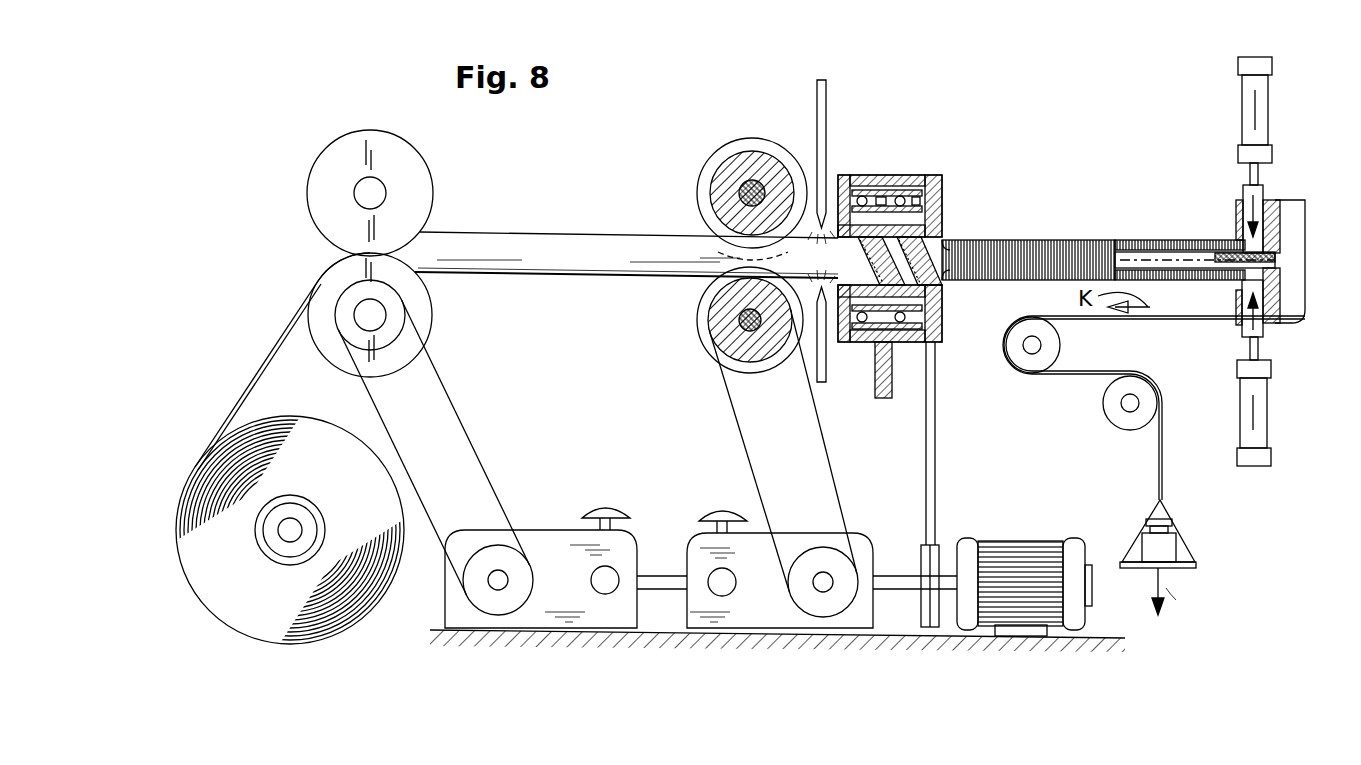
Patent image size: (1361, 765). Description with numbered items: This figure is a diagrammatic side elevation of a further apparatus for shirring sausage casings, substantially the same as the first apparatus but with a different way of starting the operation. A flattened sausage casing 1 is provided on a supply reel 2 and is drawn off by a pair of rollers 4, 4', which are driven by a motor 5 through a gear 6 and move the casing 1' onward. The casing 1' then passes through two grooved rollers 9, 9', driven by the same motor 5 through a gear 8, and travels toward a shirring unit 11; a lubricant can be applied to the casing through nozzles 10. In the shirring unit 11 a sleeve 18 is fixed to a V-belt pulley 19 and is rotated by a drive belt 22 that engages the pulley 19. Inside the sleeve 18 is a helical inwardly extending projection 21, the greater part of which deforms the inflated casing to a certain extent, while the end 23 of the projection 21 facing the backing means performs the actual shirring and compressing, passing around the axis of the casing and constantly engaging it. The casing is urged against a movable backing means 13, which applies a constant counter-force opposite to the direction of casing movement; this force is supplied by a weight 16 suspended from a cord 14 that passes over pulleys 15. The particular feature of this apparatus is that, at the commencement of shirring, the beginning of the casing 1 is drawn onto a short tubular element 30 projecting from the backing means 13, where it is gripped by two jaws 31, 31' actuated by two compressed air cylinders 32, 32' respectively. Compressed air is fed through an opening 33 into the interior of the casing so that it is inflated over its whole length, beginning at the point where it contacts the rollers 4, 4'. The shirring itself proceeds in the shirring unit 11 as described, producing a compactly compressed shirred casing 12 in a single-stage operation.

The flattened sausage casing 1 is at (282, 361).
The inflated casing 1' is at (626, 243).
The supply reel 2 is at (352, 610).
The roller 4 is at (390, 315).
The roller 4' is at (365, 190).
The motor 5 is at (1017, 545).
The gear 6 is at (555, 622).
The gear 8 is at (812, 622).
The grooved roller 9 is at (737, 320).
The grooved roller 9' is at (752, 190).
The nozzles 10 is at (826, 95).
The shirring unit 11 is at (878, 177).
The shirred casing 12 is at (1073, 240).
The backing means 13 is at (1290, 212).
The cord 14 is at (1160, 472).
The pulleys 15 is at (1027, 370).
The weight 16 is at (1172, 550).
The sleeve 18 is at (940, 210).
The V-belt pulley 19 is at (942, 316).
The helical projection 21 is at (945, 235).
The drive belt 22 is at (937, 458).
The end of projection 23 is at (950, 248).
The tubular element 30 is at (1215, 248).
The jaw 31 is at (1231, 320).
The jaw 31' is at (1229, 208).
The compressed air cylinder 32 is at (1276, 416).
The compressed air cylinder 32' is at (1230, 110).
The opening 33 is at (1275, 262).